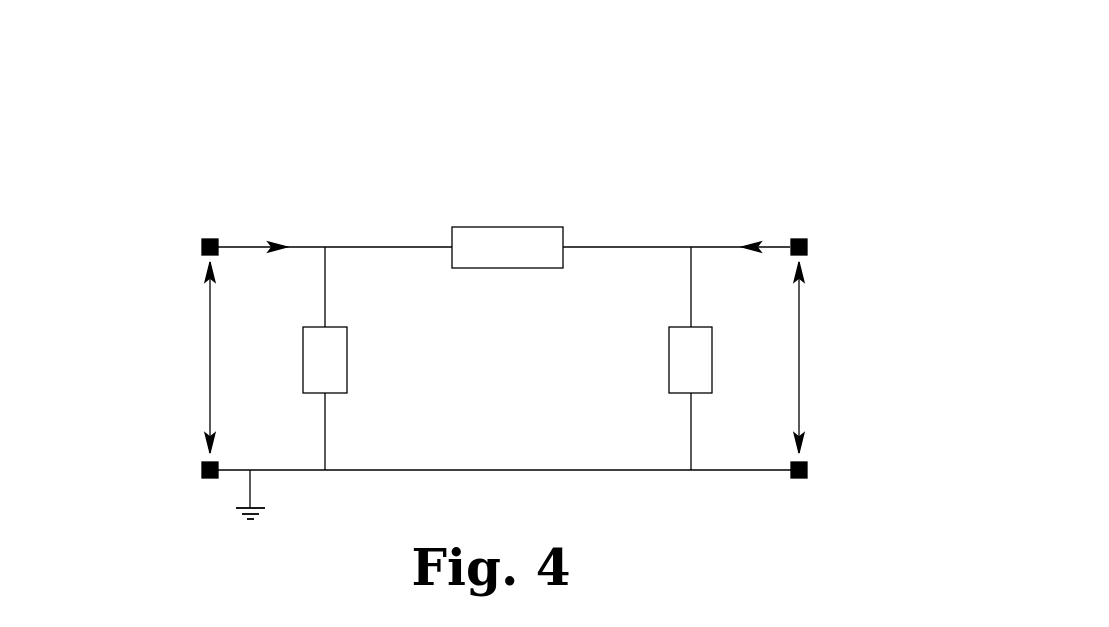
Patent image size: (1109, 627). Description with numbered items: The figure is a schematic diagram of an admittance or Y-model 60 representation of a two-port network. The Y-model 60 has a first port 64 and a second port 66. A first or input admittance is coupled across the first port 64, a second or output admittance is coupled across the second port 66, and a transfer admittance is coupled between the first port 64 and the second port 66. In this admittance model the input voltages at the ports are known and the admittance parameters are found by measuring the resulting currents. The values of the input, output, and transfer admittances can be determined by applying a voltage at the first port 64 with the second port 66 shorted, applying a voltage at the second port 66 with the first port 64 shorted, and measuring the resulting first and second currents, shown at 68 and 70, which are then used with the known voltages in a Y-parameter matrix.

The Y-model 60 is at (728, 128).
The first port 64 is at (140, 352).
The second port 66 is at (865, 352).
The resulting current I1 68 is at (210, 200).
The resulting current I2 70 is at (796, 200).